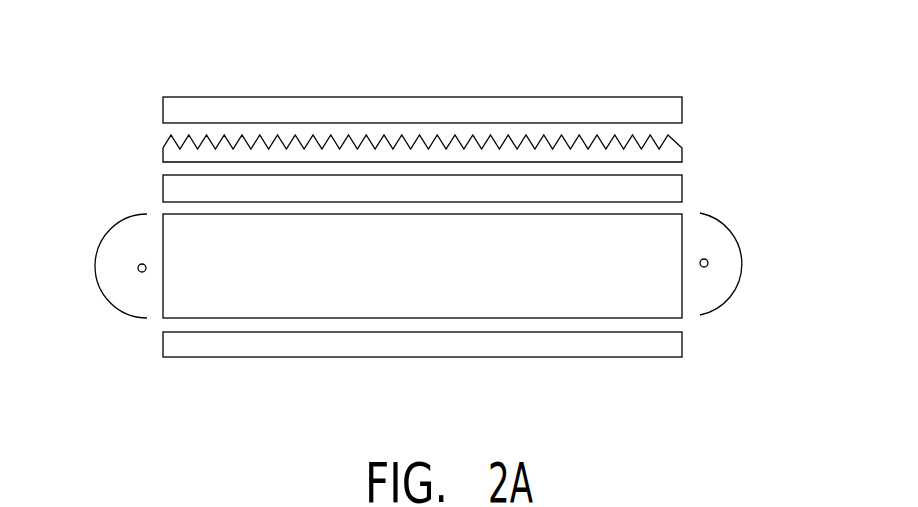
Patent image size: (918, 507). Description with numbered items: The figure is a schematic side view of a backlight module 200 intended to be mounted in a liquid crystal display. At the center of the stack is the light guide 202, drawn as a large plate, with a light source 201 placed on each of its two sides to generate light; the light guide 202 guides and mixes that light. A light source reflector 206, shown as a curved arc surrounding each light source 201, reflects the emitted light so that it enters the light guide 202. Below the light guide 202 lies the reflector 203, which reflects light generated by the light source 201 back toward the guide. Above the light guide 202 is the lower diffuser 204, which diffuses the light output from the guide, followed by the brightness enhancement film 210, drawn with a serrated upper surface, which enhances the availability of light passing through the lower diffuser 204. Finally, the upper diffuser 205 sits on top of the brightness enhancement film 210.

The backlight module 200 is at (801, 31).
The light source 201 is at (138, 268).
The light guide 202 is at (668, 286).
The reflector 203 is at (675, 341).
The lower diffuser 204 is at (672, 183).
The upper diffuser 205 is at (672, 107).
The light source reflector 206 is at (110, 228).
The brightness enhancement film 210 is at (672, 150).